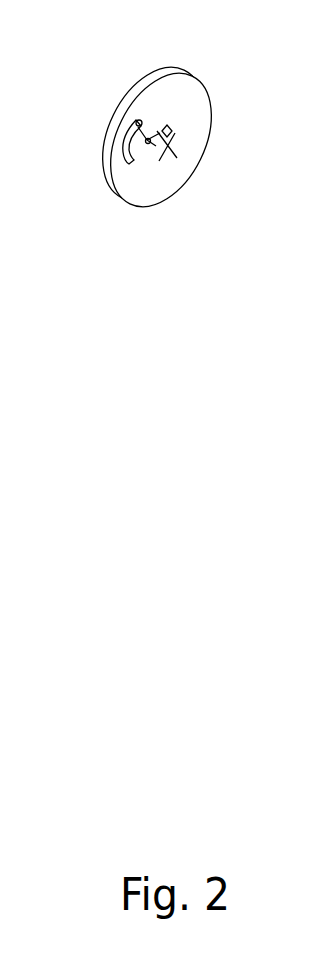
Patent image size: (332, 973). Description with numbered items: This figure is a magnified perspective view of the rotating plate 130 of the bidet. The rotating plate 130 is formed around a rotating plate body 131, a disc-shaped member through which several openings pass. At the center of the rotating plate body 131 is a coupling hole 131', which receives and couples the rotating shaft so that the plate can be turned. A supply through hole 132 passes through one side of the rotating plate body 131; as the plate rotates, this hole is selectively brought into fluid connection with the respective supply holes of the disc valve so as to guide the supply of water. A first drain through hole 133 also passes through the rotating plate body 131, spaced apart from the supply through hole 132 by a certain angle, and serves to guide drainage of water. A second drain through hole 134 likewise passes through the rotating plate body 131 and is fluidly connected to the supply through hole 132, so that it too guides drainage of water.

The rotating plate 130 is at (150, 70).
The rotating plate body 131 is at (160, 133).
The coupling hole 131' is at (202, 131).
The supply through hole 132 is at (124, 151).
The first drain through hole 133 is at (172, 155).
The second drain through hole 134 is at (148, 142).